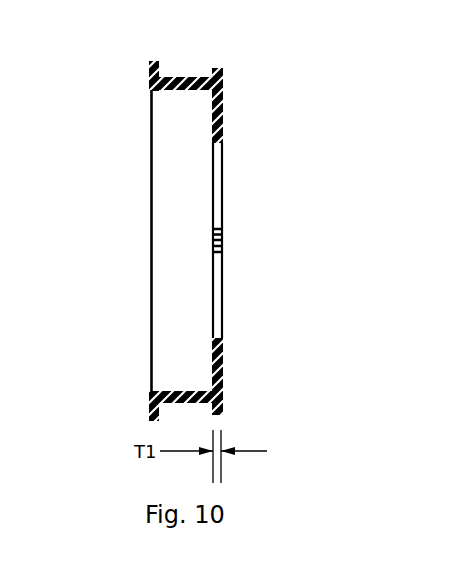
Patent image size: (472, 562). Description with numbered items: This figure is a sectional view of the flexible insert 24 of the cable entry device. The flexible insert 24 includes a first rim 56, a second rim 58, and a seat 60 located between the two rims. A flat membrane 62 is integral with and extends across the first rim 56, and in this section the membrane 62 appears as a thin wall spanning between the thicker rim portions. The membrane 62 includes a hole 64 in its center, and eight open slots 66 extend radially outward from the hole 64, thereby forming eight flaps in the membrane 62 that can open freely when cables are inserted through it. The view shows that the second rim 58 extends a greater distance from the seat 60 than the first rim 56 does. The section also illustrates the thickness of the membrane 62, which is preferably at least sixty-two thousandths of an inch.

The flexible insert 24 is at (92, 208).
The first rim 56 is at (216, 68).
The second rim 58 is at (150, 62).
The seat 60 is at (183, 79).
The membrane 62 is at (223, 117).
The hole 64 is at (217, 243).
The open slots 66 is at (217, 187).